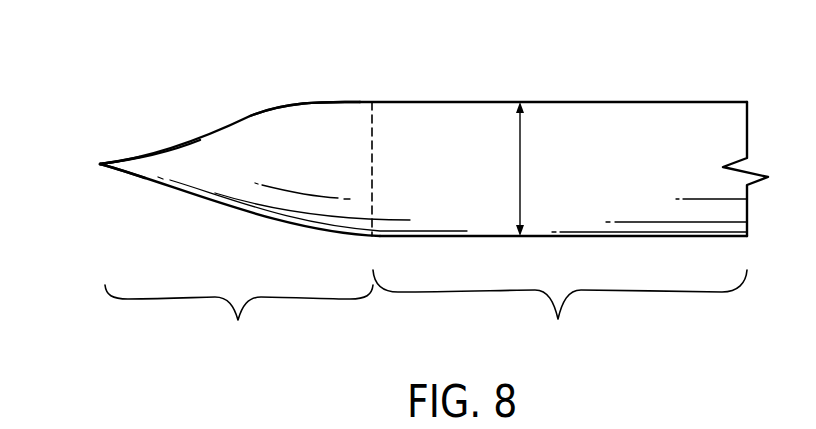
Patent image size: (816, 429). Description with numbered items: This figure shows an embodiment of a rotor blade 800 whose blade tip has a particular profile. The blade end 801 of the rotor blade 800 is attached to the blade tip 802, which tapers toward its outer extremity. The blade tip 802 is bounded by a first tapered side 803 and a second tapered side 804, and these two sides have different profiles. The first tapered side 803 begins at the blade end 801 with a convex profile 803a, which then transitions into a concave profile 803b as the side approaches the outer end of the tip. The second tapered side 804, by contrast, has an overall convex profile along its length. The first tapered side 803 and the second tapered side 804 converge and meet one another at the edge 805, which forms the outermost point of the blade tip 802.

The rotor blade 800 is at (650, 184).
The blade end 801 is at (560, 314).
The blade tip 802 is at (239, 321).
The first tapered side 803 is at (237, 127).
The convex profile 803a is at (292, 95).
The concave profile 803b is at (134, 150).
The second tapered side 804 is at (190, 198).
The edge 805 is at (103, 165).